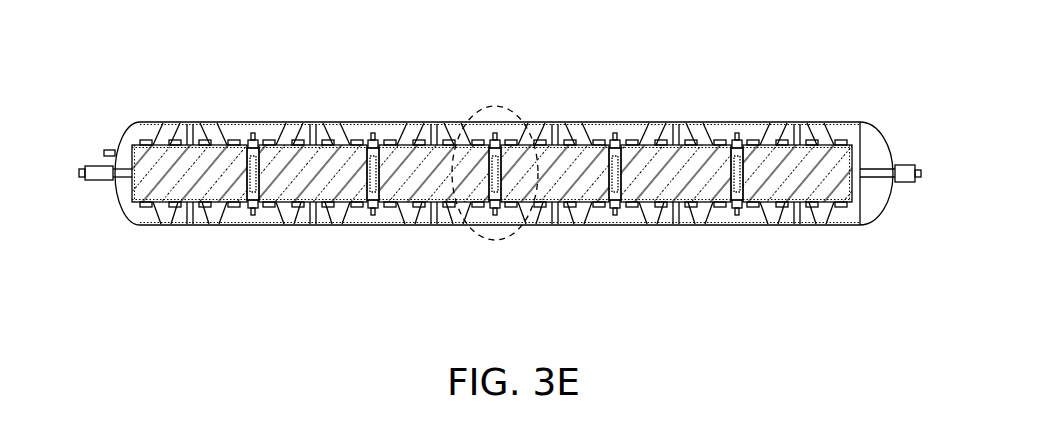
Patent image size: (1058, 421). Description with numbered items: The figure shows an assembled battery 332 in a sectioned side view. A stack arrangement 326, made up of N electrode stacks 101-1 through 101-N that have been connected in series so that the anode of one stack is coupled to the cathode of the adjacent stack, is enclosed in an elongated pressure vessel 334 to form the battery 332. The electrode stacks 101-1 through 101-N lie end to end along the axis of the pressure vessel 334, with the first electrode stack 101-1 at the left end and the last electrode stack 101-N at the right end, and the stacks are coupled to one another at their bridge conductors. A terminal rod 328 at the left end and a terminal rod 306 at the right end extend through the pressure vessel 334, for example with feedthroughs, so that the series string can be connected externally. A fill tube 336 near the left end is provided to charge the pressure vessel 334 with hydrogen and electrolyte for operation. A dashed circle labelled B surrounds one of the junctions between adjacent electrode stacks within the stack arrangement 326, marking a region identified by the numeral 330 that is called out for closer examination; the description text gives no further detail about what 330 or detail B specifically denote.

The battery 332 is at (150, 70).
The pressure vessel 334 is at (264, 122).
The fill tube 336 is at (109, 148).
The terminal rod 328 is at (92, 182).
The terminal rod 306 is at (910, 165).
The cell interconnect 330 is at (491, 105).
The stack arrangement 326 is at (645, 155).
The electrode stack 101-1 is at (210, 183).
The electrode stack 101-N is at (793, 183).
The detail view B is at (480, 238).